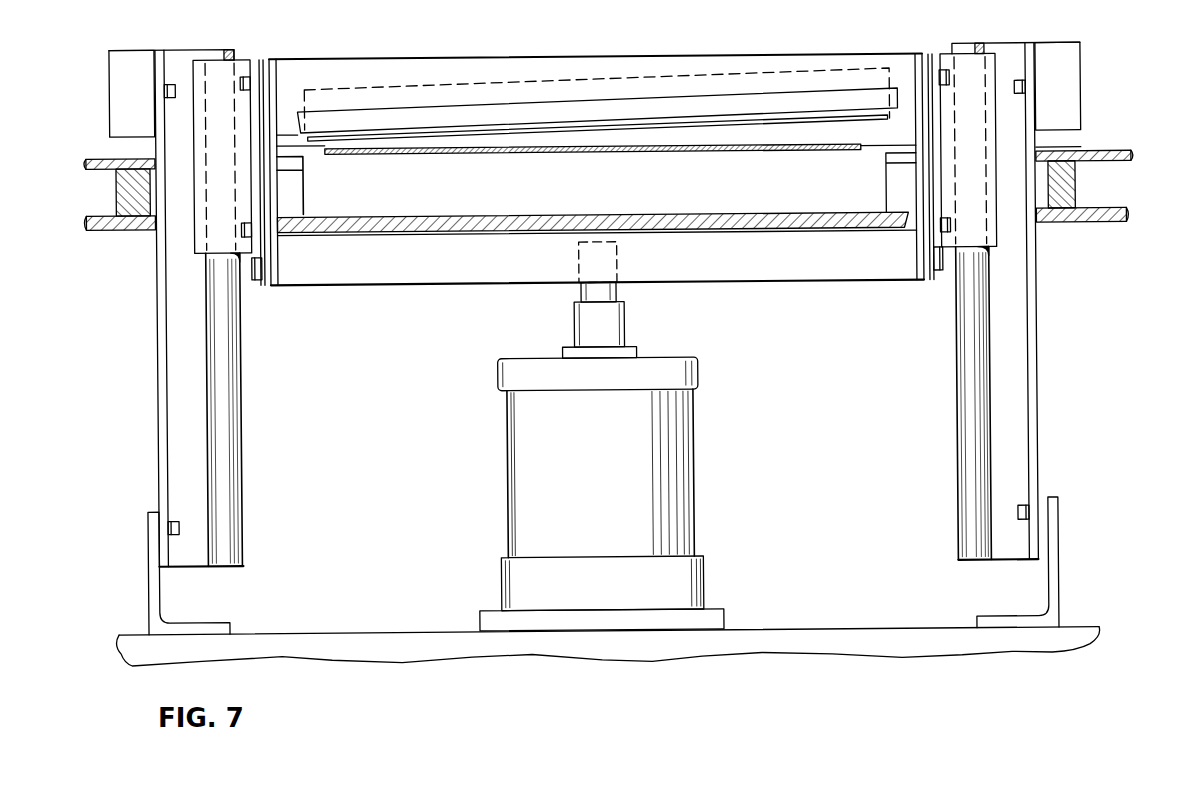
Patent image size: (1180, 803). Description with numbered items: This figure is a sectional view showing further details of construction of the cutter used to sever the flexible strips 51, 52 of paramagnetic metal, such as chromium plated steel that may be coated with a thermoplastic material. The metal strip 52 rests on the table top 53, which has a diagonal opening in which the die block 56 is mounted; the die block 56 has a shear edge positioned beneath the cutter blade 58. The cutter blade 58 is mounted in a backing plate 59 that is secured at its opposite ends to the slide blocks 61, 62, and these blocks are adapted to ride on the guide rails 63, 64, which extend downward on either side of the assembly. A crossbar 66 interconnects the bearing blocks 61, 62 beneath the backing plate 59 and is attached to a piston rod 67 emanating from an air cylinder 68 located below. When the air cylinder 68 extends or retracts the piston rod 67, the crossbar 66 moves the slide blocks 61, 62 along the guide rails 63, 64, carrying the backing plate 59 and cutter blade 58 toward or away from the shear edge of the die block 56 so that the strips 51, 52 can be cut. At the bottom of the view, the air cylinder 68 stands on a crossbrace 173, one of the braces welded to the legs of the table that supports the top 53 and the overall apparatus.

The flexible strip 51 is at (558, 155).
The flexible strip 52 is at (727, 144).
The table top 53 is at (1113, 158).
The die block 56 is at (763, 200).
The cutter blade 58 is at (417, 136).
The backing plate 59 is at (566, 58).
The slide block 61 is at (244, 58).
The slide block 62 is at (946, 62).
The guide rail 63 is at (228, 380).
The guide rail 64 is at (962, 376).
The crossbar 66 is at (738, 283).
The piston rod 67 is at (577, 311).
The air cylinder 68 is at (690, 471).
The crossbrace 173 is at (828, 632).